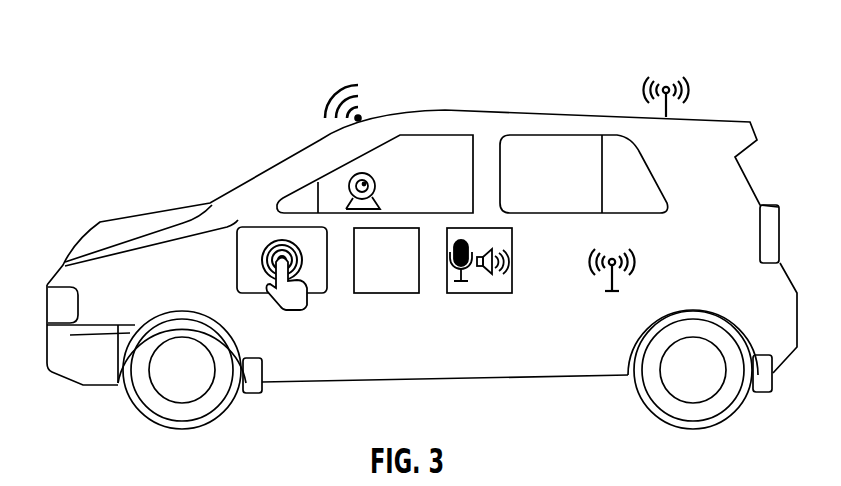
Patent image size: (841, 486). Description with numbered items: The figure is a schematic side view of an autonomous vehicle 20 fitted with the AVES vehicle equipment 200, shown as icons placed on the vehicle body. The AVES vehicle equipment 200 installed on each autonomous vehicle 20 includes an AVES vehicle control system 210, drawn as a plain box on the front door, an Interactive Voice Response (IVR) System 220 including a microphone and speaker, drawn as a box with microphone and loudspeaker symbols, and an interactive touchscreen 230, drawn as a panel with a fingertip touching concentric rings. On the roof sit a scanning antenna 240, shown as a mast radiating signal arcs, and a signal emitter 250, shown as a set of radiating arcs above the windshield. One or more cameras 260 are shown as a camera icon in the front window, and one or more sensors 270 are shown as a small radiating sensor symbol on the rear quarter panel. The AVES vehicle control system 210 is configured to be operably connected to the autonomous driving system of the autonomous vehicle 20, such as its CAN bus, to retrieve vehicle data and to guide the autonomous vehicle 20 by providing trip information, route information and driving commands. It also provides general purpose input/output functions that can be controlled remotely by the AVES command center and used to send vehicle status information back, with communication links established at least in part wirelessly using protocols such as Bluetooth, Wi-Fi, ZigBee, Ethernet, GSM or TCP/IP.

The AVES vehicle equipment 200 is at (152, 60).
The autonomous vehicle 20 is at (100, 222).
The AVES vehicle control system 210 is at (379, 283).
The Interactive Voice Response (IVR) System 220 is at (473, 285).
The interactive touchscreen 230 is at (263, 262).
The scanning antenna 240 is at (692, 90).
The signal emitter 250 is at (333, 96).
The cameras 260 is at (378, 187).
The sensors 270 is at (637, 265).